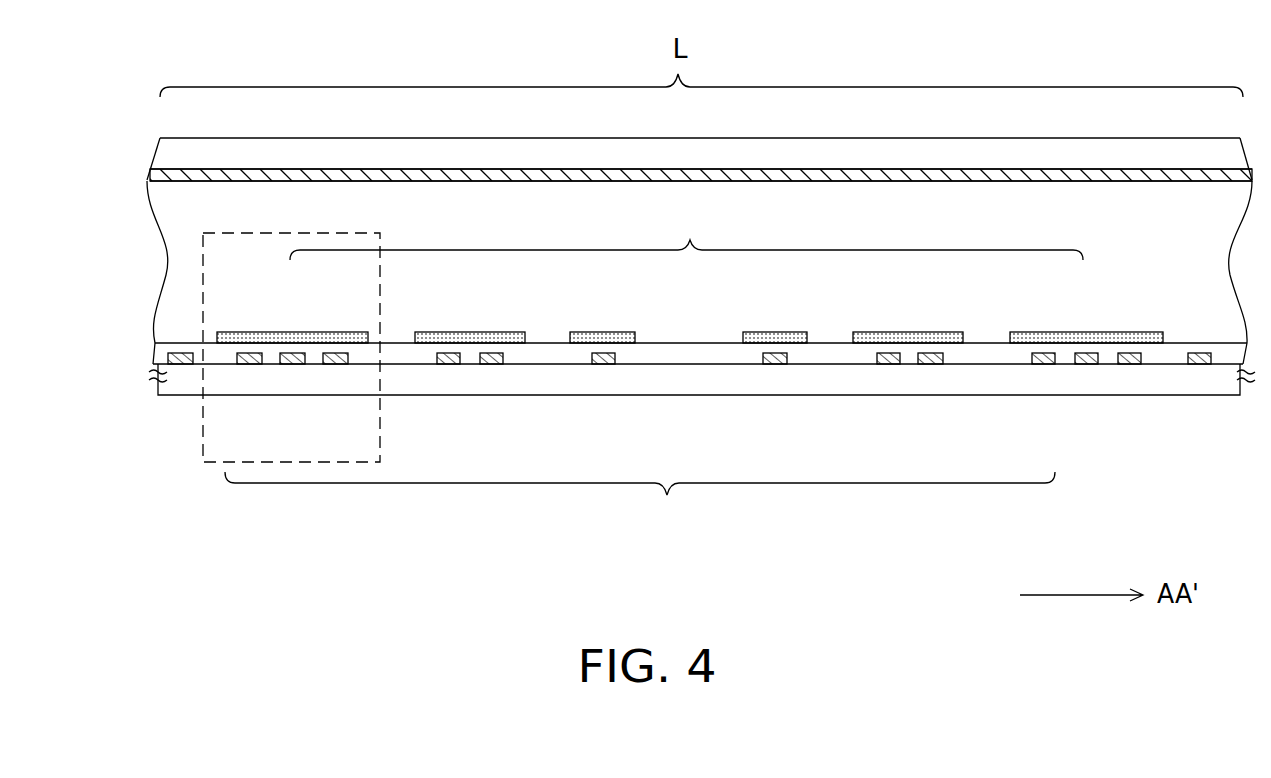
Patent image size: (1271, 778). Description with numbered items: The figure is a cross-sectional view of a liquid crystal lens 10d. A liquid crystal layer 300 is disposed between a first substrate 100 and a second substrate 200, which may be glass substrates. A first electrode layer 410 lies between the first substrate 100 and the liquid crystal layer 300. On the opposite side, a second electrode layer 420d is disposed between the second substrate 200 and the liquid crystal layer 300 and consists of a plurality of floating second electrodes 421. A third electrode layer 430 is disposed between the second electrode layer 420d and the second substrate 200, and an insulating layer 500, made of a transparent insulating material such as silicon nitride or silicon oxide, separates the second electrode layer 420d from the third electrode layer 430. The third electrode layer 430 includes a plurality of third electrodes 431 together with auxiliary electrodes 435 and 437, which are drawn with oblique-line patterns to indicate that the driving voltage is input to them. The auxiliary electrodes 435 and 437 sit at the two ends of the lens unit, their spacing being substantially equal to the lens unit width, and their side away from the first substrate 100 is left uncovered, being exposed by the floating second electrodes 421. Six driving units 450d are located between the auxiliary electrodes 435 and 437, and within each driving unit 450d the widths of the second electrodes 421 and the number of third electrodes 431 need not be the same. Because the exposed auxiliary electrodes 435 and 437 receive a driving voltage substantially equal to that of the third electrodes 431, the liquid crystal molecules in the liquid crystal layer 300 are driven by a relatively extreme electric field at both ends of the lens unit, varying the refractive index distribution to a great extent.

The first substrate 100 is at (158, 156).
The first electrode layer 410 is at (150, 173).
The liquid crystal layer 300 is at (167, 267).
The insulating layer 500 is at (160, 354).
The second substrate 200 is at (158, 386).
The second electrode layer 420d is at (686, 232).
The floating second electrodes 421 is at (306, 331).
The third electrodes 431 is at (246, 365).
The auxiliary electrode 435 is at (181, 366).
The auxiliary electrode 437 is at (1198, 365).
The driving unit 450d is at (203, 435).
The third electrode layer 430 is at (640, 503).
The liquid crystal lens 10d is at (1223, 532).